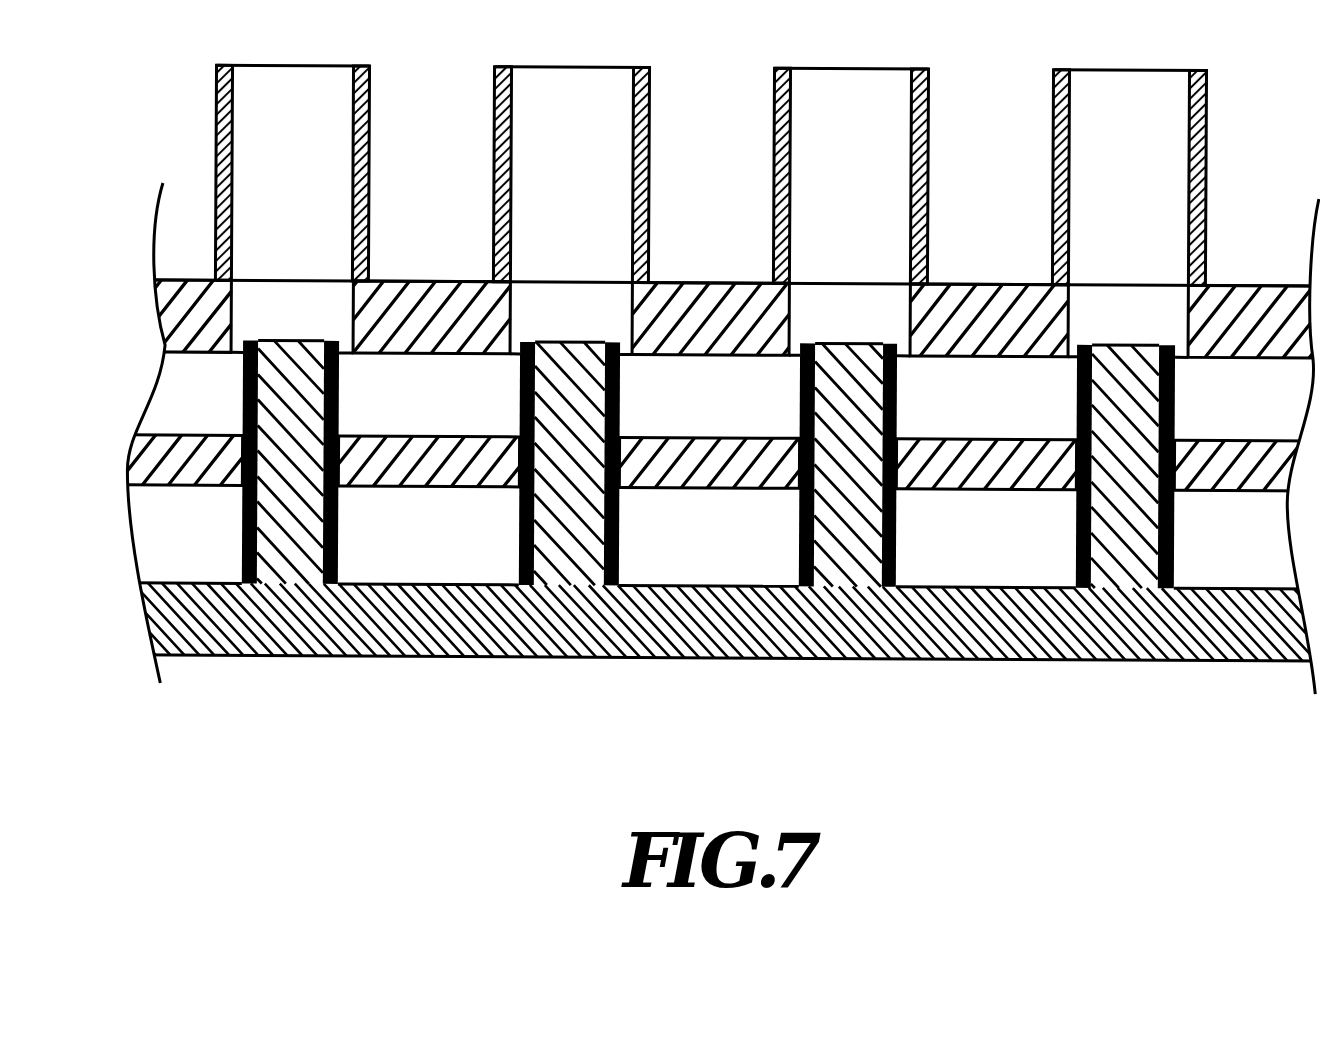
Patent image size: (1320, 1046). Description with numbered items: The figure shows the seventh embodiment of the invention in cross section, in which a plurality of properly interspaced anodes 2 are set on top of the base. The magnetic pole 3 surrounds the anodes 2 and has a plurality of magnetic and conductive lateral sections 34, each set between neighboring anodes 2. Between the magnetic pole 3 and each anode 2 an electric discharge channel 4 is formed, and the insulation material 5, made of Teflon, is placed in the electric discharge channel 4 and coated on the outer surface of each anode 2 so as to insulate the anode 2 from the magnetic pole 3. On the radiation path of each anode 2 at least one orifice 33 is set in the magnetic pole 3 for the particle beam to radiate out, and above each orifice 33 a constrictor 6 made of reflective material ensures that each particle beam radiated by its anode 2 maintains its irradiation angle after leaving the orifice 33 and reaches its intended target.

The anode 2 is at (275, 490).
The magnetic pole 3 is at (178, 465).
The electric discharge channel 4 is at (368, 518).
The insulation material 5 is at (243, 418).
The constrictor 6 is at (215, 97).
The orifice 33 is at (305, 313).
The lateral section 34 is at (360, 458).